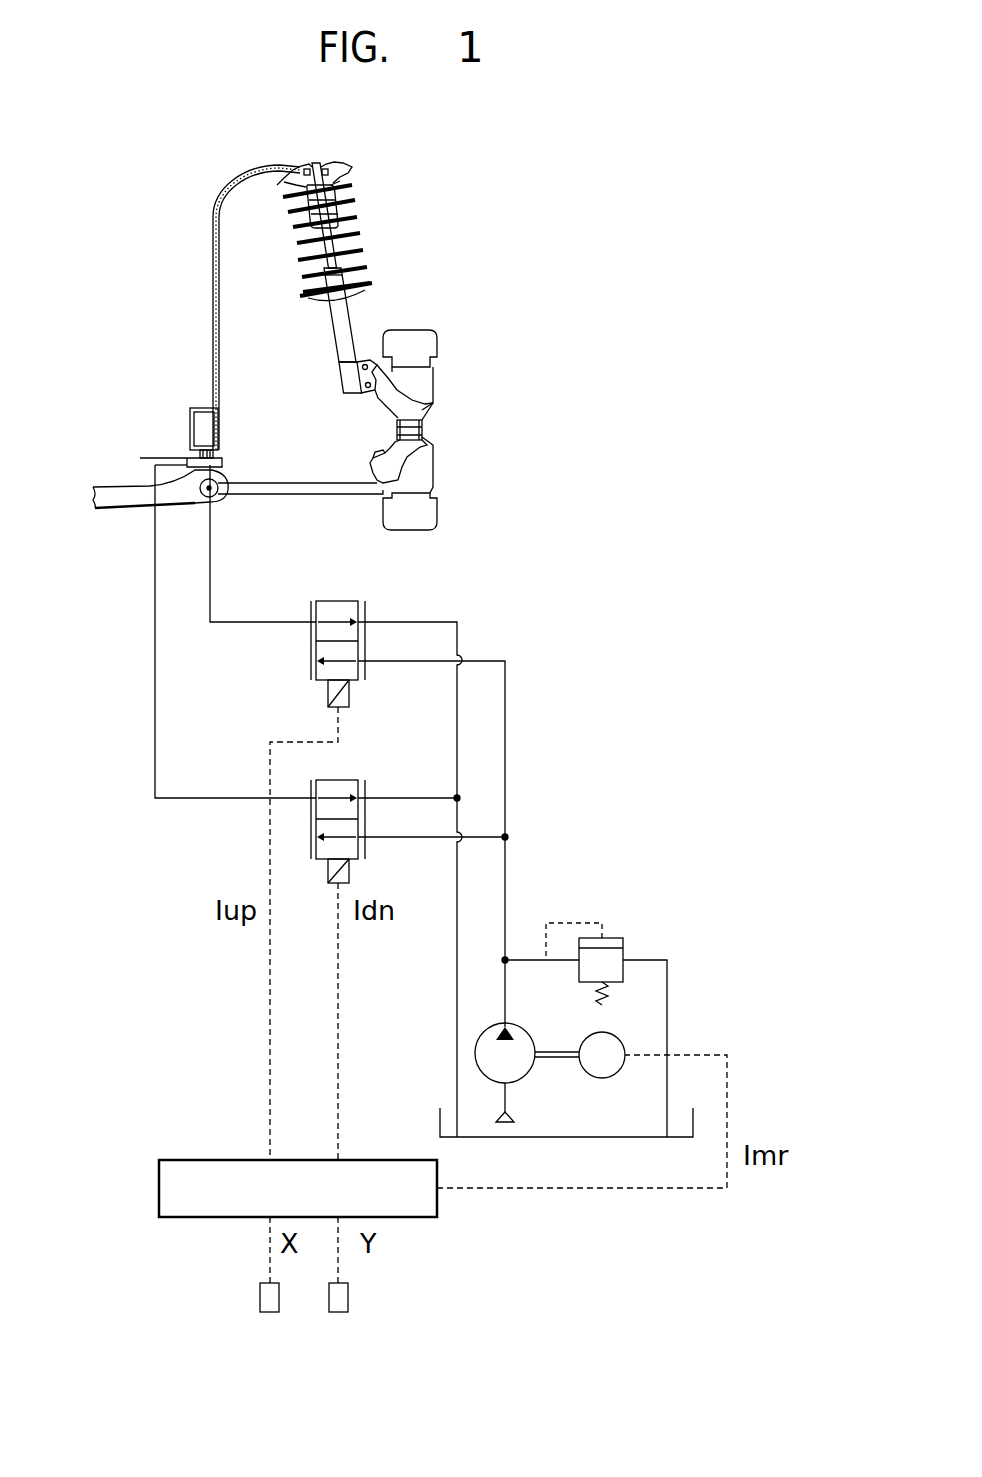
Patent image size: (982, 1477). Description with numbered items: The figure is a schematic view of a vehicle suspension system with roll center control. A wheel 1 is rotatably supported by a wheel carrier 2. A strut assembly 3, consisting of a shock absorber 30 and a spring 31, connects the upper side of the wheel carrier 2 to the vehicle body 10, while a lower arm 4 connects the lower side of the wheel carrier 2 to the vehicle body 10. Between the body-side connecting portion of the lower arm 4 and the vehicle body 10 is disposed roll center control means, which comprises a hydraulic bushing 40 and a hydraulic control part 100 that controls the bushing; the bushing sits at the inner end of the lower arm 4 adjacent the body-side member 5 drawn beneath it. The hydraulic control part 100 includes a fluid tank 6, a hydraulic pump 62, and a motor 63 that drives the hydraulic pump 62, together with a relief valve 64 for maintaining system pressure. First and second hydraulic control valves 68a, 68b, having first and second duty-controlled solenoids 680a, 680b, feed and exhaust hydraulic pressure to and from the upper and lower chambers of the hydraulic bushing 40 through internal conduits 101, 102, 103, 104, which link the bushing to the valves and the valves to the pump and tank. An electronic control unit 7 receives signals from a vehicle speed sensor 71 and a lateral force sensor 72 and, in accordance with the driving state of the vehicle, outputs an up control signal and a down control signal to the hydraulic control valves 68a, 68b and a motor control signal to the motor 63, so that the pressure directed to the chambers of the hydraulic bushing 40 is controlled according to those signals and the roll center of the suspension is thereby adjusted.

The wheel 1 is at (427, 350).
The wheel carrier 2 is at (405, 408).
The strut assembly 3 is at (372, 277).
The shock absorber 30 is at (343, 320).
The spring 31 is at (352, 202).
The lower arm 4 is at (320, 483).
The hydraulic bushing 40 is at (214, 482).
The vehicle body frame 5 is at (117, 492).
The vehicle body 10 is at (213, 264).
The hydraulic control part 100 is at (558, 637).
The internal conduit 101 is at (246, 620).
The internal conduit 102 is at (190, 798).
The internal conduit 103 is at (505, 698).
The internal conduit 104 is at (440, 620).
The first hydraulic control valve 68a is at (381, 623).
The second hydraulic control valve 68b is at (381, 817).
The first duty-controlled solenoid 680a is at (349, 693).
The second duty-controlled solenoid 680b is at (349, 872).
The fluid tank 6 is at (566, 1054).
The hydraulic pump 62 is at (532, 1067).
The motor 63 is at (613, 1078).
The relief valve 64 is at (613, 938).
The electronic control unit 7 is at (159, 1187).
The vehicle speed sensor 71 is at (345, 1303).
The lateral force sensor 72 is at (267, 1303).